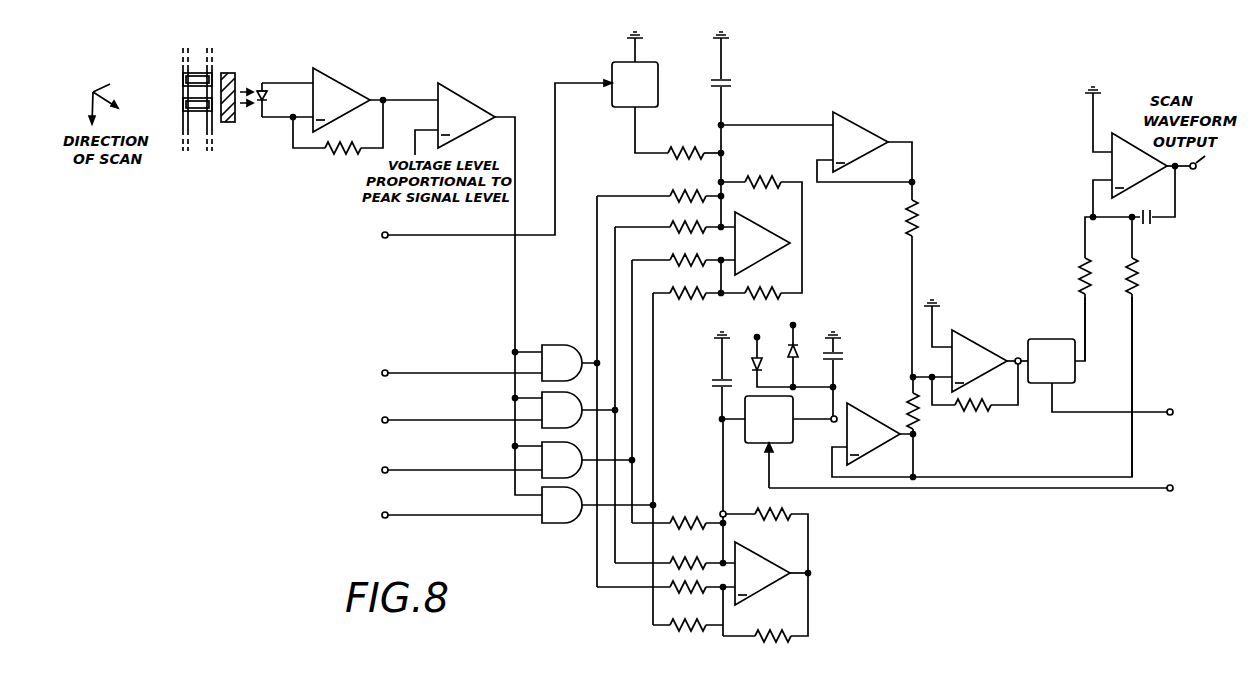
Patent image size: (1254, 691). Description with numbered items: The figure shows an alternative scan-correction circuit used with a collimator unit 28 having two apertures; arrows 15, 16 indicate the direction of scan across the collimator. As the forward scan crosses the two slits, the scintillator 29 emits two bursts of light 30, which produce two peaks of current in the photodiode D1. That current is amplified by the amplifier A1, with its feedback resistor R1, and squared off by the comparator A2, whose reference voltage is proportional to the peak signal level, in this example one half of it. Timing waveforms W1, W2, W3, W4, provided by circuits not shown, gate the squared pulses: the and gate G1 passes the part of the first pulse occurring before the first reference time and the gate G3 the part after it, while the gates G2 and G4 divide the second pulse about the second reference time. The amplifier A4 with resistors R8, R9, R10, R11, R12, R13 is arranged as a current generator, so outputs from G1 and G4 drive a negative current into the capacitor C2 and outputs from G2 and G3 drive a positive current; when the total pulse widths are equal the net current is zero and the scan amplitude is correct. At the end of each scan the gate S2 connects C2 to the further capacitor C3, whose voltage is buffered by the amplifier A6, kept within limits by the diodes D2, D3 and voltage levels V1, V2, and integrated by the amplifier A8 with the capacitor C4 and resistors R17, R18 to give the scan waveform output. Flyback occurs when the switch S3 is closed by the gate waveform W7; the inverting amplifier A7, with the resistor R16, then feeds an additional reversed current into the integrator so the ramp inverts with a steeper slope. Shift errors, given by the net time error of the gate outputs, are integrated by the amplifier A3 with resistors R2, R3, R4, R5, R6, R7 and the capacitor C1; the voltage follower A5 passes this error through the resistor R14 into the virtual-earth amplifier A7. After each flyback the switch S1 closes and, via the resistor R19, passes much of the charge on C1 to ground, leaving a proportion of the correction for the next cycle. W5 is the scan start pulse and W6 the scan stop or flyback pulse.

The scan direction arrow 15 is at (89, 90).
The scan direction arrow 16 is at (112, 84).
The collimator unit 28 is at (197, 152).
The scintillator 29 is at (231, 123).
The light beam 30 is at (262, 88).
The photodiode D1 is at (274, 100).
The amplifier A1 is at (350, 100).
The resistor R1 is at (338, 138).
The comparator A2 is at (478, 289).
The scan start pulse W5 is at (477, 163).
The switch S1 is at (640, 92).
The resistor R19 is at (695, 143).
The capacitor C1 is at (707, 129).
The voltage follower A5 is at (818, 148).
The resistor R14 is at (932, 279).
The resistor R6 is at (761, 199).
The resistor R2 is at (660, 187).
The resistor R3 is at (675, 218).
The resistor R4 is at (683, 251).
The resistor R5 is at (688, 279).
The amplifier A3 is at (762, 243).
The resistor R7 is at (761, 271).
The and gate G1 is at (556, 363).
The gate G2 is at (565, 410).
The gate G3 is at (574, 460).
The gate G4 is at (599, 505).
The timing waveform W1 is at (442, 374).
The timing waveform W2 is at (442, 421).
The timing waveform W3 is at (442, 471).
The timing waveform W4 is at (442, 516).
The capacitor C2 is at (707, 375).
The gate S2 is at (777, 442).
The voltage level V1 is at (756, 337).
The diode D2 is at (792, 372).
The voltage level V2 is at (805, 326).
The diode D3 is at (805, 367).
The further capacitor C3 is at (845, 375).
The amplifier A6 is at (981, 388).
The scan stop pulse W6 is at (976, 475).
The inverting amplifier A7 is at (970, 346).
The resistor R16 is at (975, 400).
The switch S3 is at (1097, 354).
The gate waveform W7 is at (1172, 400).
The amplifier A8 is at (1145, 152).
The capacitor C4 is at (1133, 209).
The resistor R17 is at (1064, 289).
The resistor R18 is at (1152, 347).
The resistor R8 is at (679, 513).
The resistor R9 is at (675, 553).
The resistor R10 is at (666, 599).
The resistor R11 is at (688, 638).
The amplifier A4 is at (765, 527).
The resistor R12 is at (767, 540).
The resistor R13 is at (765, 607).